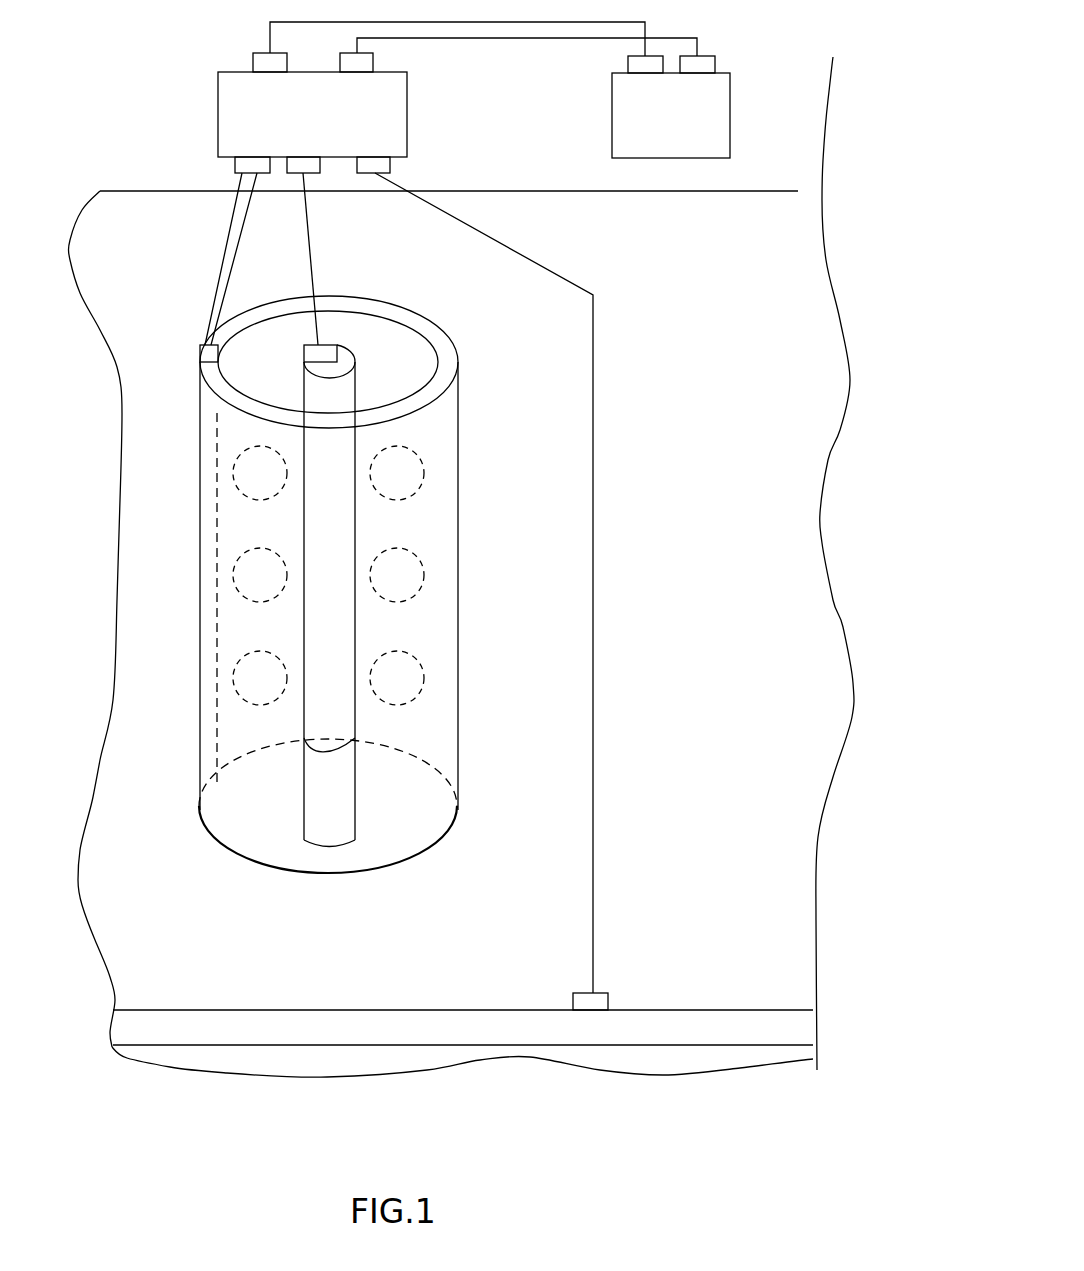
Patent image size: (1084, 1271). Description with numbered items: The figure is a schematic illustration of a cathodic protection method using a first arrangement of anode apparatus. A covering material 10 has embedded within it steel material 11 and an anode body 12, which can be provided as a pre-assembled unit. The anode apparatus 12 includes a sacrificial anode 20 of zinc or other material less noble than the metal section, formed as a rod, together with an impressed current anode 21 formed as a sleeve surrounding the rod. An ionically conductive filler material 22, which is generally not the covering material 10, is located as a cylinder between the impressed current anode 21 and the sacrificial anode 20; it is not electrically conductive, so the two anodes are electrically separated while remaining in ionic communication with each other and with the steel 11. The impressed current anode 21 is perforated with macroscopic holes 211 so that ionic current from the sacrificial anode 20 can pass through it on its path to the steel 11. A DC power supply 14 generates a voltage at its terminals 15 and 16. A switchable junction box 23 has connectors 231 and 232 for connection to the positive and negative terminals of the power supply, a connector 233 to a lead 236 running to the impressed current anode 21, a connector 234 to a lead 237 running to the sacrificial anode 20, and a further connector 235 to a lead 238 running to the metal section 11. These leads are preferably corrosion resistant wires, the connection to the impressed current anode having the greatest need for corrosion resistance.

The covering material 10 is at (800, 465).
The steel material 11 is at (693, 1022).
The anode body 12 is at (545, 462).
The DC power supply 14 is at (705, 133).
The terminal 15 is at (643, 66).
The terminal 16 is at (705, 62).
The sacrificial anode 20 is at (342, 398).
The impressed current anode 21 is at (448, 358).
The ionically conductive filler material 22 is at (387, 355).
The switchable junction box 23 is at (245, 128).
The macroscopic holes 211 is at (422, 575).
The connector 231 is at (268, 62).
The connector 232 is at (358, 63).
The connector 233 is at (245, 185).
The connector 234 is at (303, 163).
The output port 235 is at (373, 163).
The lead 236 is at (225, 288).
The lead 237 is at (310, 252).
The lead 238 is at (496, 591).